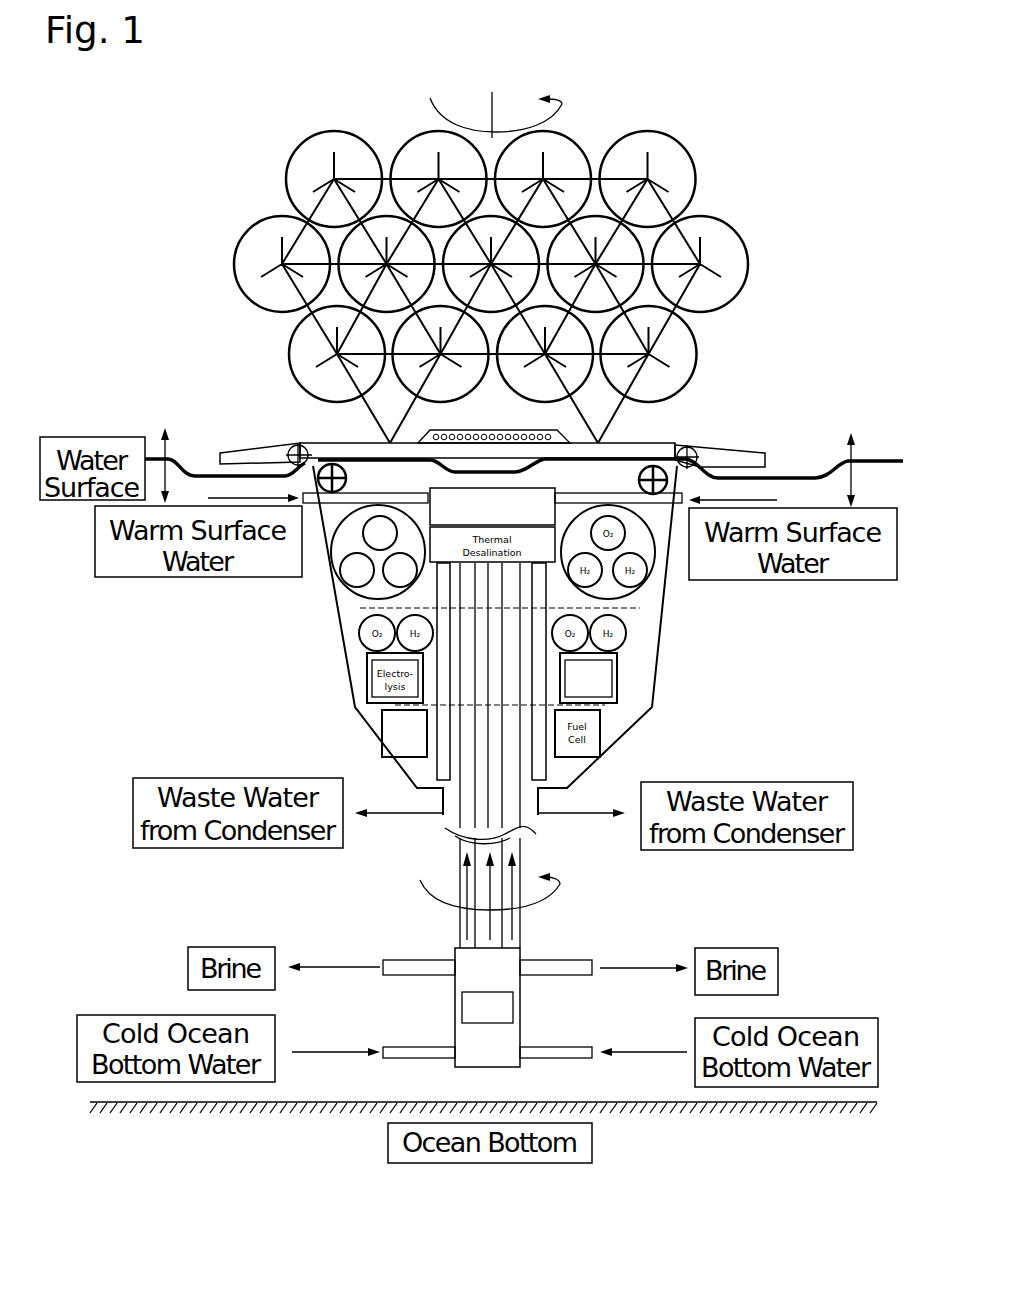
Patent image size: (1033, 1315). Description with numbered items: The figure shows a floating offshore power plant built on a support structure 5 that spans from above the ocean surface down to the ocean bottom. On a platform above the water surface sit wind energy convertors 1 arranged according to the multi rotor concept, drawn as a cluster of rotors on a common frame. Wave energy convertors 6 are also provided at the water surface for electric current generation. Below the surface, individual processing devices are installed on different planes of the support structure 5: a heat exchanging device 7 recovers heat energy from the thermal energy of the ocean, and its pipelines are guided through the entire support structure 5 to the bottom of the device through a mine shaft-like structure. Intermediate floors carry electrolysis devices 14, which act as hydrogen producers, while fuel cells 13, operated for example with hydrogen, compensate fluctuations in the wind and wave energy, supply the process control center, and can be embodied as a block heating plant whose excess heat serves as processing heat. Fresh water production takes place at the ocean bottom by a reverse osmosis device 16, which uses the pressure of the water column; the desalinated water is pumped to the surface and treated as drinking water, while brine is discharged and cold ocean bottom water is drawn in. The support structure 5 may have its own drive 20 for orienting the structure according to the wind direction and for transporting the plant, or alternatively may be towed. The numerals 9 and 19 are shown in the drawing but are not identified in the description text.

The wind energy convertor 1 is at (282, 264).
The support structure 5 is at (302, 470).
The wave energy convertor 6 is at (220, 453).
The heat exchanging device 7 is at (440, 497).
The gas storage tank 9 is at (343, 592).
The fuel cell 13 is at (393, 743).
The electrolysis device 14 is at (598, 686).
The reverse osmosis device 16 is at (492, 976).
The solar collector unit 19 is at (565, 435).
The drive 20 is at (700, 447).